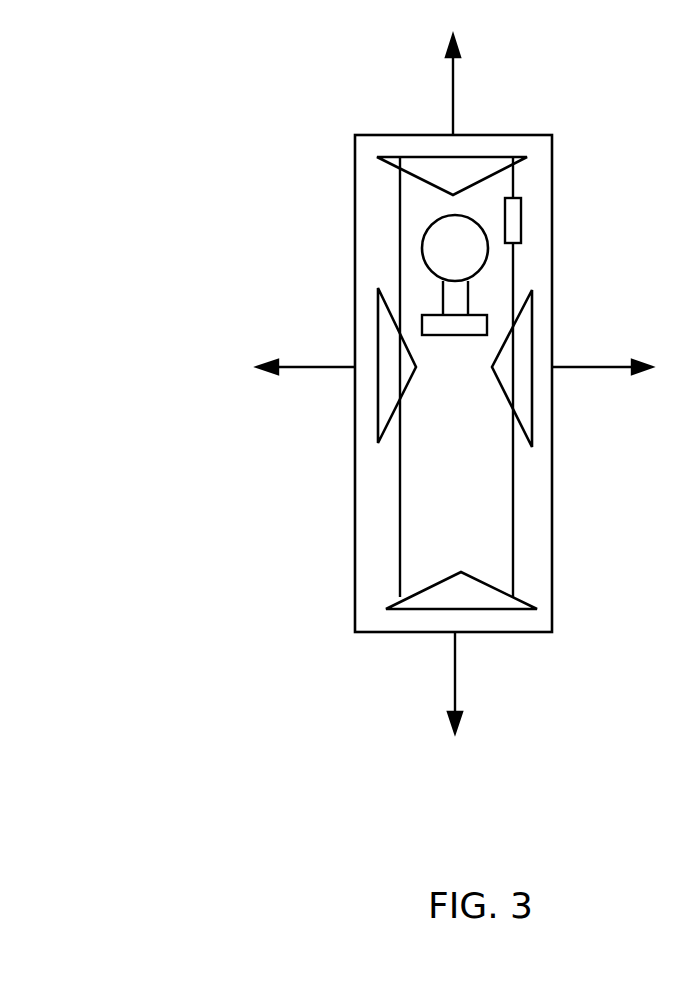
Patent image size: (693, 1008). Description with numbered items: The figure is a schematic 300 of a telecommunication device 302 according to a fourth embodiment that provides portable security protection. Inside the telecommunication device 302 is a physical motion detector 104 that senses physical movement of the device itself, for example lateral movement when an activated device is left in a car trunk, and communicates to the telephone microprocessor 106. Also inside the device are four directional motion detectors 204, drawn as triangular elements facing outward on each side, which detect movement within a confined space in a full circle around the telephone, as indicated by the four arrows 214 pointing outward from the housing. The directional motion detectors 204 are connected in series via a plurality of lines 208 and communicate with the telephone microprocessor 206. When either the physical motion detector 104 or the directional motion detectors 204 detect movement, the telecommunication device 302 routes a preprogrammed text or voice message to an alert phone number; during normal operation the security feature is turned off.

The schematic 300 is at (150, 34).
The telecommunication device 302 is at (355, 178).
The physical motion detector 104 is at (423, 232).
The telephone microprocessor 106 is at (437, 313).
The directional motion detectors 204 is at (522, 160).
The telephone microprocessor 206 is at (522, 212).
The lines 208 is at (400, 255).
The arrows 214 is at (455, 80).